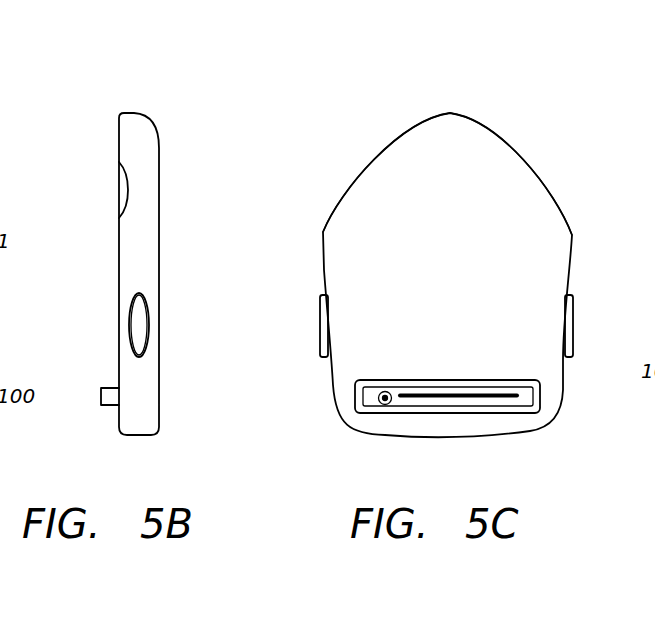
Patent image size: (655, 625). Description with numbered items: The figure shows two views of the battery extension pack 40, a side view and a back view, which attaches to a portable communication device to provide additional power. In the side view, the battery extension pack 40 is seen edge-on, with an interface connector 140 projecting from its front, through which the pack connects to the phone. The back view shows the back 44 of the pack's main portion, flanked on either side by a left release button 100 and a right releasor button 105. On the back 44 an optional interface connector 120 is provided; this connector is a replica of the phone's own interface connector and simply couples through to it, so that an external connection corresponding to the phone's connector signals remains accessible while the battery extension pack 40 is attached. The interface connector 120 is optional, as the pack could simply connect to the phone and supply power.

In FIG. 5B, the battery extension pack 40 is at (177, 79).
In FIG. 5C, the battery extension pack 40 is at (487, 47).
In FIG. 5C, the back 44 is at (483, 198).
In FIG. 5B, the left release button 100 is at (140, 312).
In FIG. 5C, the left release button 100 is at (322, 333).
In FIG. 5C, the right releasor button 105 is at (573, 298).
In FIG. 5C, the interface connector 120 is at (425, 402).
In FIG. 5B, the interface connector 140 is at (106, 406).